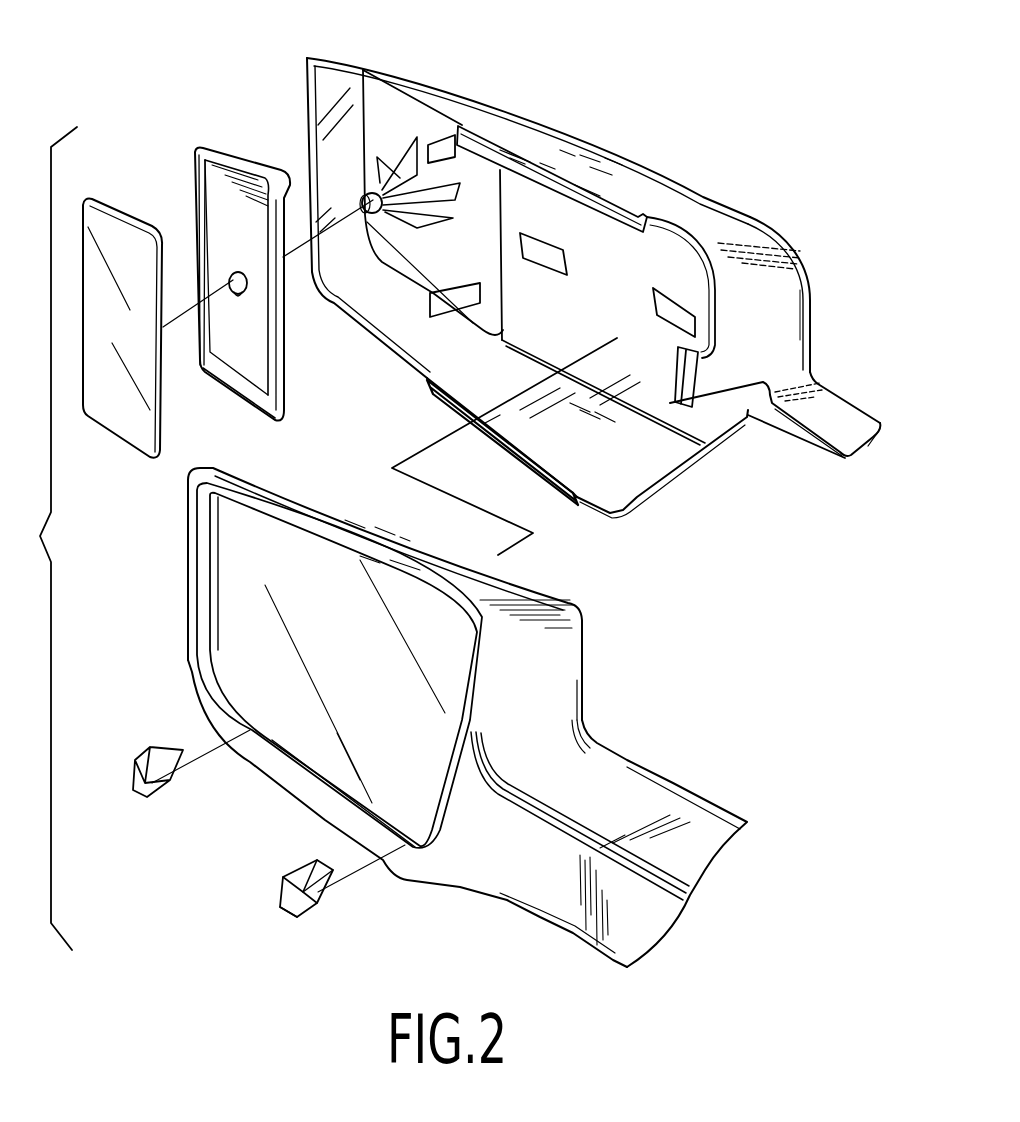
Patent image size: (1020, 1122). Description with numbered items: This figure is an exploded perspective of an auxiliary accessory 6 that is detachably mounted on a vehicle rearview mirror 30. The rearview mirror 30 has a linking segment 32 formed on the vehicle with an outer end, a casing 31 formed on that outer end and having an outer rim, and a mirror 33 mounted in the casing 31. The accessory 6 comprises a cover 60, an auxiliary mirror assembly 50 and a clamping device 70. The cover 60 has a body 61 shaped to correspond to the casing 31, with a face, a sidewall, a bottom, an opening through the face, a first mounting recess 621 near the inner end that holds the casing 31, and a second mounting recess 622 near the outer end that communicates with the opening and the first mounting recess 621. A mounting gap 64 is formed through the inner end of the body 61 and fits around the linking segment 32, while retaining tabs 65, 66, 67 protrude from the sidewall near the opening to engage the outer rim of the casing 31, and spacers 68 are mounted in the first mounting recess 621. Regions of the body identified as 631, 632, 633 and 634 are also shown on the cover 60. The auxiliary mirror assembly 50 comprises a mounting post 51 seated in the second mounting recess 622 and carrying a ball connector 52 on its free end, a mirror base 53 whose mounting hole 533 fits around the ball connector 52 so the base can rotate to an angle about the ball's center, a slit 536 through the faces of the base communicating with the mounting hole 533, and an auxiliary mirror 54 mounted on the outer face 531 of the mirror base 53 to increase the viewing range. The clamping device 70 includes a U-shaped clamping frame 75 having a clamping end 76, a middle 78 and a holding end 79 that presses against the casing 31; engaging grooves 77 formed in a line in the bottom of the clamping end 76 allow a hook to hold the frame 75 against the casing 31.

The auxiliary accessory 6 is at (766, 136).
The vehicle rearview mirror 30 is at (455, 709).
The casing 31 is at (280, 483).
The linking segment 32 is at (700, 810).
The mirror 33 is at (222, 587).
The auxiliary mirror assembly 50 is at (216, 298).
The mounting post 51 is at (427, 187).
The ball connector 52 is at (382, 212).
The mirror base 53 is at (248, 258).
The auxiliary mirror 54 is at (122, 425).
The outer face 531 is at (257, 380).
The mounting hole 533 is at (237, 294).
The slit 536 is at (231, 273).
The cover 60 is at (556, 296).
The body 61 is at (717, 413).
The mounting gap 64 is at (750, 433).
The retaining tab 65 is at (473, 140).
The retaining tab 66 is at (683, 370).
The retaining tab 67 is at (517, 457).
The spacer 68 is at (540, 257).
The clamping device 70 is at (236, 833).
The clamping frame 75 is at (236, 833).
The clamping end 76 is at (319, 937).
The engaging grooves 77 is at (320, 897).
The middle 78 is at (290, 893).
The holding end 79 is at (317, 867).
The first mounting recess 621 is at (673, 243).
The second mounting recess 622 is at (397, 73).
The top rim 631 is at (587, 143).
The right side wall 632 is at (793, 307).
The floor 633 is at (633, 483).
The left side wall 634 is at (323, 102).